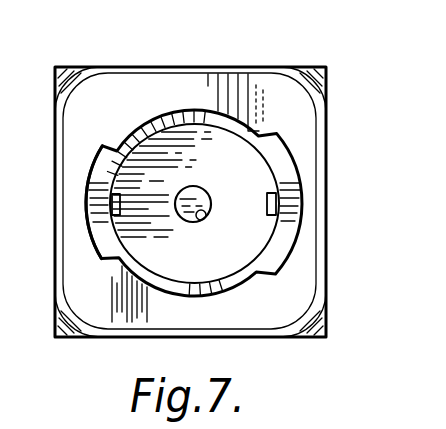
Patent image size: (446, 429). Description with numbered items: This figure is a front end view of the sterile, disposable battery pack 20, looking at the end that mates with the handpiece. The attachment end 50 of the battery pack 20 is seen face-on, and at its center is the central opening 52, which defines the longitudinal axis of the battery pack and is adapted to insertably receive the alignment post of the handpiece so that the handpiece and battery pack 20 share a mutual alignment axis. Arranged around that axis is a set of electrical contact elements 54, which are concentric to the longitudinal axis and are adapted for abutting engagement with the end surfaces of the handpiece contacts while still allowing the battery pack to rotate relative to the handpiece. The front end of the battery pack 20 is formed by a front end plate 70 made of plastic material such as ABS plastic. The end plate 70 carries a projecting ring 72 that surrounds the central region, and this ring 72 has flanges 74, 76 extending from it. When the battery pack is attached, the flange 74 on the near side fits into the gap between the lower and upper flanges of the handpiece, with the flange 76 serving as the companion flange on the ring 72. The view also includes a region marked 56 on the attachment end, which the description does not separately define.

The disposable battery pack 20 is at (92, 60).
The attachment end 50 is at (137, 67).
The central opening 52 is at (208, 220).
The electrical contact elements 54 is at (278, 203).
The housing cavity wall 56 is at (246, 78).
The front end plate 70 is at (217, 262).
The projecting ring 72 is at (195, 108).
The flange 74 is at (291, 163).
The flange 76 is at (102, 190).